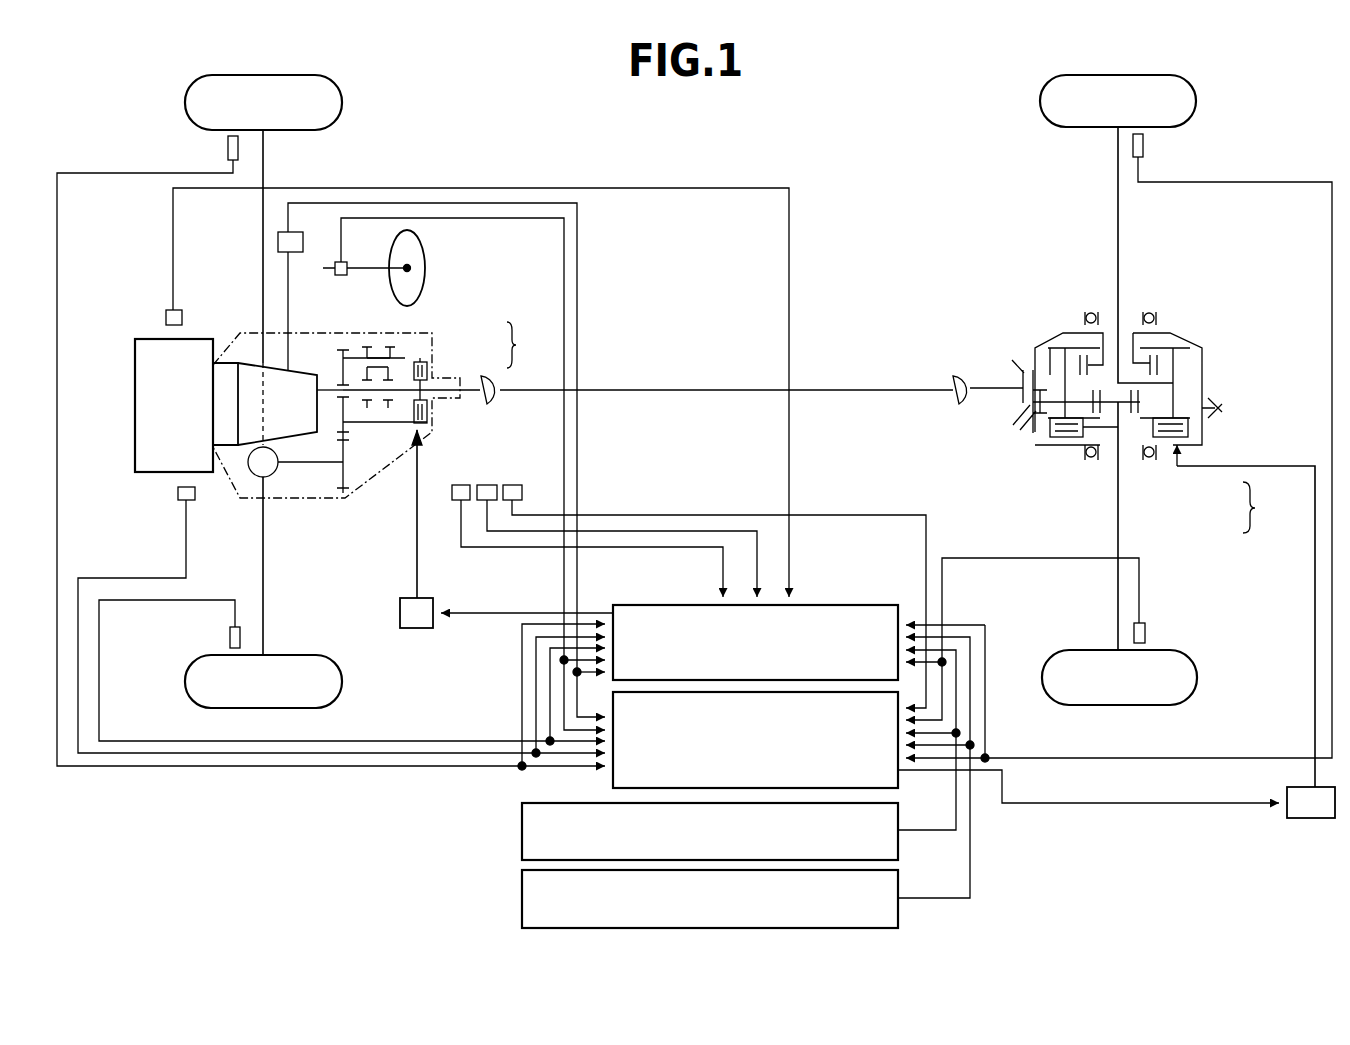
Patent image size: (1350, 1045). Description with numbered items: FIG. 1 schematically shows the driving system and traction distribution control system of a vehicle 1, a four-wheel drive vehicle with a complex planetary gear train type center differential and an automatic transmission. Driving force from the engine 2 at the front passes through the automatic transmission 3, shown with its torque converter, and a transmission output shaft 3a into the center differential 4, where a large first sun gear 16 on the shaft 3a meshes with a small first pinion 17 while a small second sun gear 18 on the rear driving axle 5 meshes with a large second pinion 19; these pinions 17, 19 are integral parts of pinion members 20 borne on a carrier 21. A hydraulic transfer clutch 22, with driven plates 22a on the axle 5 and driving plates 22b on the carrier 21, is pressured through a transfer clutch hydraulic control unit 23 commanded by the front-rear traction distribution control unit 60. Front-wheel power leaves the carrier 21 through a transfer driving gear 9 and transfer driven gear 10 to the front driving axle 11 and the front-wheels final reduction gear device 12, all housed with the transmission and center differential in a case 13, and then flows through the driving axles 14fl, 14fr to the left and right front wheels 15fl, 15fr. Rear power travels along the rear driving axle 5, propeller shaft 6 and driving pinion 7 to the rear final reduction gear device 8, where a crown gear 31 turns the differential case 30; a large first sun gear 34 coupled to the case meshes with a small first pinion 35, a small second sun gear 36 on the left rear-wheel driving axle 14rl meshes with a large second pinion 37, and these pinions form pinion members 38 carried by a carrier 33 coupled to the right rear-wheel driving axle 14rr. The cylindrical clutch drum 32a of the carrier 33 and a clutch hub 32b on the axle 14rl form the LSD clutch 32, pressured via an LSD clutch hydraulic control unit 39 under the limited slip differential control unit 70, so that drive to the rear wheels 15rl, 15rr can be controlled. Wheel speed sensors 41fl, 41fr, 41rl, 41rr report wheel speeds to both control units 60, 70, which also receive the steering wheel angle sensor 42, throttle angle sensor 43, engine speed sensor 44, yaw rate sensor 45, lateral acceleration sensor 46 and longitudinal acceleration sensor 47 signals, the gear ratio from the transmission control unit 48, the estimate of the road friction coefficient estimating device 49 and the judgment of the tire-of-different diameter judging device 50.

The vehicle 1 is at (760, 164).
The engine 2 is at (135, 403).
The automatic transmission 3 is at (217, 357).
The transmission output shaft 3a is at (343, 384).
The center differential 4 is at (368, 507).
The rear driving axle 5 is at (463, 398).
The propeller shaft 6 is at (820, 389).
The driving pinion 7 is at (960, 375).
The final reduction gear device 8 is at (1143, 498).
The transfer driving gear 9 is at (343, 358).
The transfer driven gear 10 is at (343, 493).
The front driving axle 11 is at (297, 462).
The front-wheels final reduction gear device 12 is at (263, 478).
The case 13 is at (295, 505).
The front wheel right driving axle 14fr is at (268, 160).
The front wheel left driving axle 14fl is at (265, 622).
The right rear-wheel driving axle 14rr is at (1120, 228).
The left rear-wheel driving axle 14rl is at (1118, 600).
The right front wheel 15fr is at (345, 100).
The left front wheel 15fl is at (185, 683).
The right rear wheel 15rr is at (1197, 100).
The left rear wheel 15rl is at (1198, 678).
The first sun gear 16 is at (367, 408).
The first pinion 17 is at (375, 349).
The second sun gear 18 is at (385, 423).
The second pinion 19 is at (388, 347).
The pinion member 20 is at (372, 352).
The carrier 21 is at (367, 365).
The transfer clutch 22 is at (528, 345).
The driven plates 22a is at (428, 382).
The driving plates 22b is at (418, 362).
The transfer clutch hydraulic control unit 23 is at (416, 628).
The differential case 30 is at (1183, 345).
The crown gear 31 is at (1218, 408).
The LSD clutch 32 is at (1246, 616).
The clutch drum 32a is at (1188, 440).
The clutch hub 32b is at (1133, 456).
The carrier 33 is at (1185, 383).
The first sun gear 34 is at (1185, 365).
The first pinion 35 is at (1050, 370).
The second sun gear 36 is at (1185, 402).
The second pinion 37 is at (1020, 401).
The pinion member 38 is at (1055, 378).
The LSD clutch hydraulic control unit 39 is at (1312, 818).
The right front wheel speed sensor 41fr is at (228, 150).
The left front wheel speed sensor 41fl is at (230, 638).
The right rear wheel speed sensor 41rr is at (1145, 145).
The left rear wheel speed sensor 41rl is at (1147, 633).
The steering wheel angle sensor 42 is at (341, 262).
The throttle angle sensor 43 is at (178, 491).
The engine speed sensor 44 is at (166, 318).
The yaw rate sensor 45 is at (461, 485).
The lateral acceleration sensor 46 is at (487, 485).
The longitudinal acceleration sensor 47 is at (512, 485).
The transmission control unit 48 is at (303, 241).
The road friction coefficient estimating device 49 is at (522, 832).
The tire-of-different diameter judging device 50 is at (522, 898).
The front-rear traction distribution control unit 60 is at (833, 605).
The limited slip differential-for-right and left rear wheels control unit 70 is at (898, 782).